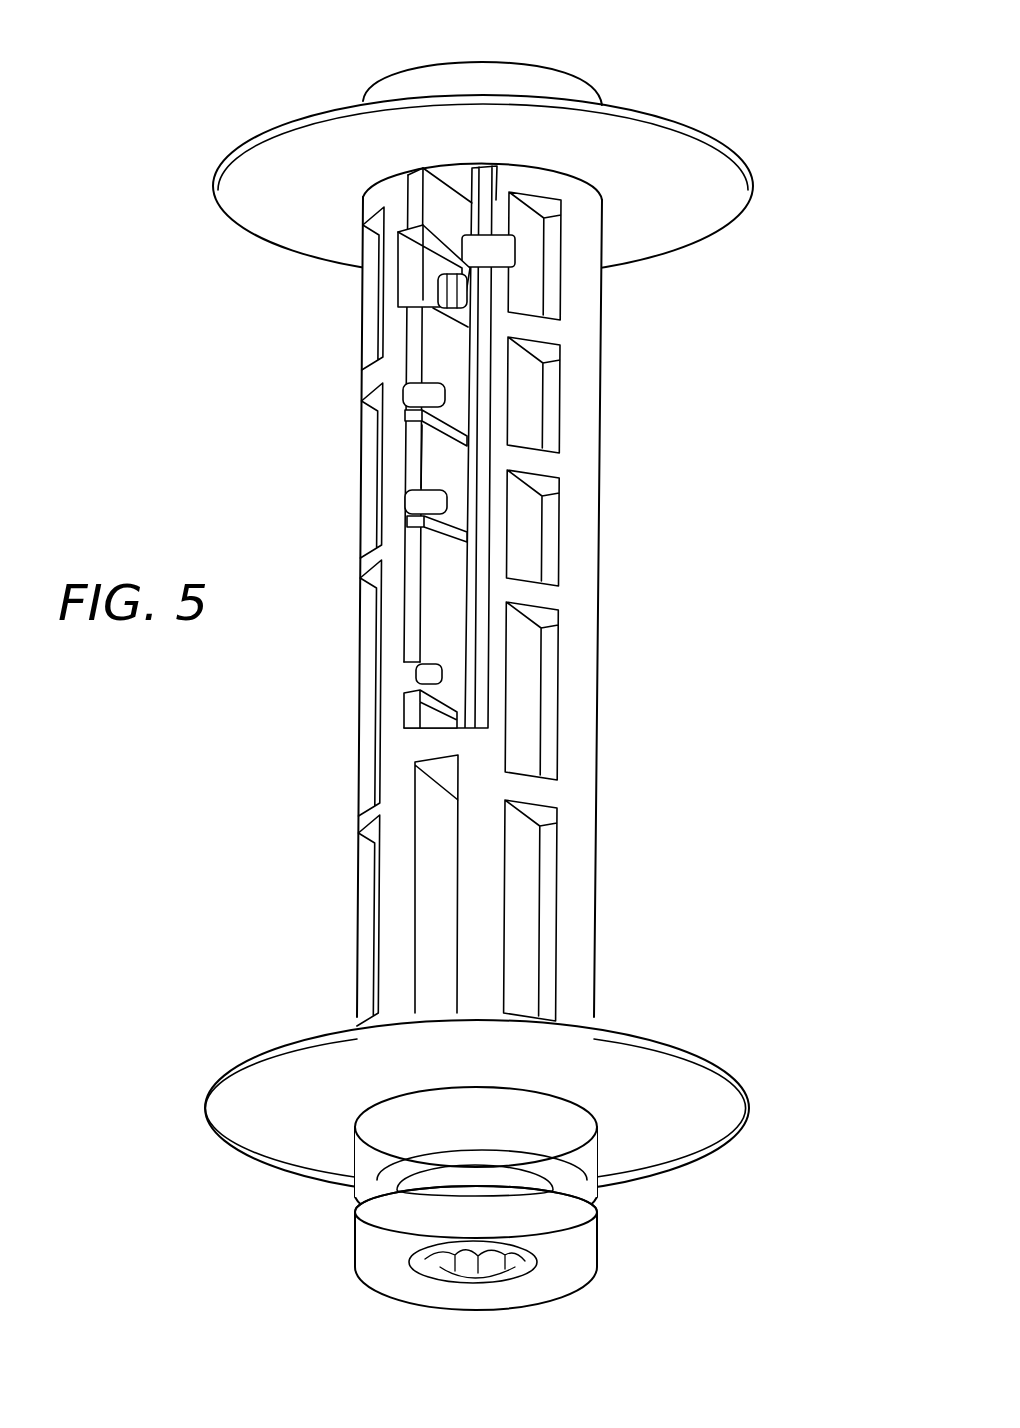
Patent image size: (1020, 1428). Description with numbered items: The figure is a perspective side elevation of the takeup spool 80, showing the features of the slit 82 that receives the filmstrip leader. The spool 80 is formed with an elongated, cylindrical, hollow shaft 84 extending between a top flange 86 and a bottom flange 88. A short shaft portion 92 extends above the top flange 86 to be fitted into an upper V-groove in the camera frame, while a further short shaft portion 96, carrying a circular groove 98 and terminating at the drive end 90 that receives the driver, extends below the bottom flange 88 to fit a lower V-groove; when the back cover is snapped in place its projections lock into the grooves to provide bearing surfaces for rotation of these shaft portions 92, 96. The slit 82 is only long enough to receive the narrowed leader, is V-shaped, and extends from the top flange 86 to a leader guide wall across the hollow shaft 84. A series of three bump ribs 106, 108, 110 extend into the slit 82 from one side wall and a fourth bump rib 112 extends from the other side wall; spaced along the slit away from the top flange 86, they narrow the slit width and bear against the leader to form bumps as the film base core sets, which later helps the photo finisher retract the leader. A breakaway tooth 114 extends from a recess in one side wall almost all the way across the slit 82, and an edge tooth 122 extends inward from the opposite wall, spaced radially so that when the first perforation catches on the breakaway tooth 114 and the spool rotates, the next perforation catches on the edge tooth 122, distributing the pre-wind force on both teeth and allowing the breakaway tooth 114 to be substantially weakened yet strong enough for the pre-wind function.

The takeup spool 80 is at (692, 727).
The slit 82 is at (432, 356).
The hollow shaft 84 is at (578, 678).
The top flange 86 is at (711, 211).
The bottom flange 88 is at (685, 1143).
The drive end 90 is at (490, 1264).
The short shaft portion 92 is at (572, 1225).
The further short shaft portion 96 is at (583, 80).
The circular groove 98 is at (382, 1188).
The bump rib 106 is at (432, 398).
The bump rib 108 is at (432, 505).
The bump rib 110 is at (418, 678).
The fourth bump rib 112 is at (432, 456).
The breakaway tooth 114 is at (436, 293).
The edge tooth 122 is at (497, 248).